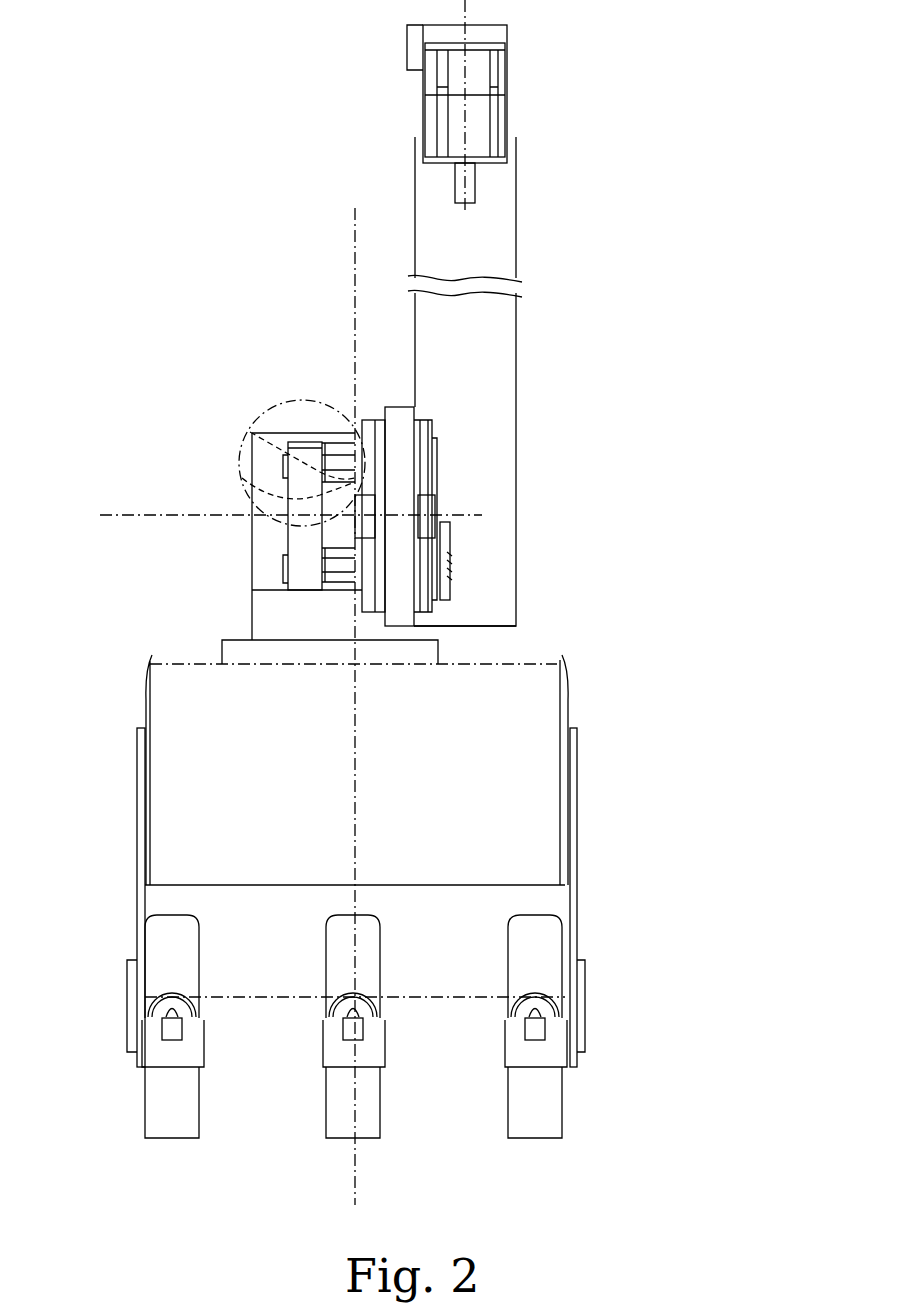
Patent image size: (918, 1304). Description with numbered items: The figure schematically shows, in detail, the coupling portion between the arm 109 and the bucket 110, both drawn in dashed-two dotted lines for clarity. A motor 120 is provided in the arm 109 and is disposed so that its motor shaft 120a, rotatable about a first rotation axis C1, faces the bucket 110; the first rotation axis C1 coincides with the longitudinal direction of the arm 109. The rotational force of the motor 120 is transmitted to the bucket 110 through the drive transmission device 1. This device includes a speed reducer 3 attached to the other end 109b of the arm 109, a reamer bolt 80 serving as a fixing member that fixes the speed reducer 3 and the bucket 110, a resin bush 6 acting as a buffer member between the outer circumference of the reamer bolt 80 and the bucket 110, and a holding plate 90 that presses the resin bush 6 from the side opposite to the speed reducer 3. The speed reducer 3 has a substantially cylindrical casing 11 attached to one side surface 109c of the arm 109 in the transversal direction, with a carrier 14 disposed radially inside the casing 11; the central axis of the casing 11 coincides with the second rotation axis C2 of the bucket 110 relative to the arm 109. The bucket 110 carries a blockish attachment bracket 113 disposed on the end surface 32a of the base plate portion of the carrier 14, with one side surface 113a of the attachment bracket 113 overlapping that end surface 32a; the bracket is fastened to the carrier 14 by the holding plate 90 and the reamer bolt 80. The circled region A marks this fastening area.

The first rotation axis C1 is at (467, 14).
The motor 120 is at (507, 105).
The motor shaft 120a is at (475, 185).
The one side surface of the arm 109c is at (415, 192).
The arm 109 is at (516, 345).
The other end of the arm 109b is at (516, 610).
The drive transmission device 1 is at (362, 517).
The second rotation axis C2 is at (362, 511).
The speed reducer 3 is at (374, 388).
The reamer bolt 80 is at (336, 460).
The region A is at (265, 412).
The end surface of the base plate portion 32a is at (233, 504).
The carrier 14 is at (252, 433).
The resin bush 6 is at (262, 476).
The holding plate 90 is at (288, 545).
The attachment bracket 113 is at (252, 603).
The one side surface of the attachment bracket 113a is at (363, 628).
The casing 11 is at (401, 642).
The bucket 110 is at (572, 812).